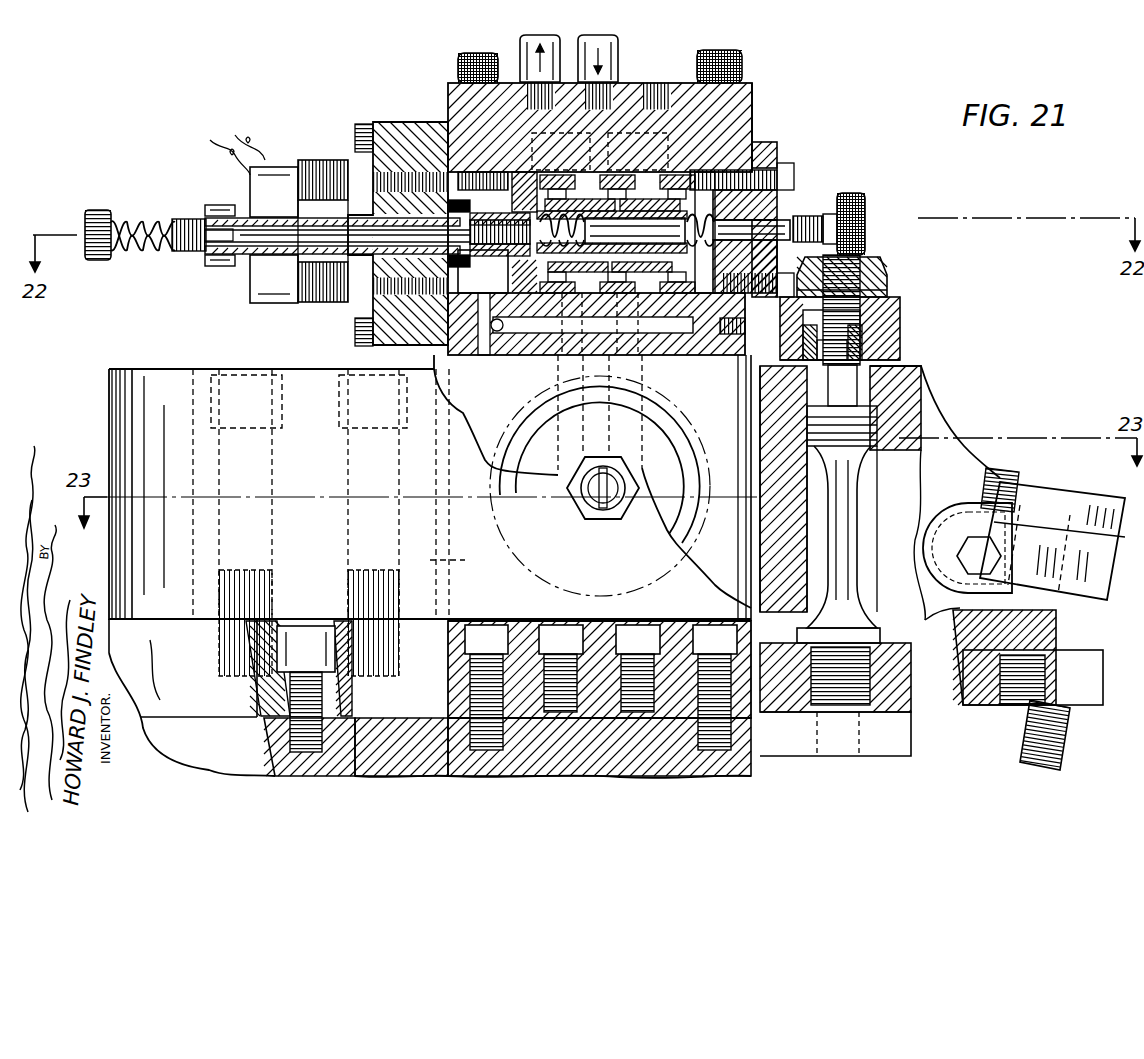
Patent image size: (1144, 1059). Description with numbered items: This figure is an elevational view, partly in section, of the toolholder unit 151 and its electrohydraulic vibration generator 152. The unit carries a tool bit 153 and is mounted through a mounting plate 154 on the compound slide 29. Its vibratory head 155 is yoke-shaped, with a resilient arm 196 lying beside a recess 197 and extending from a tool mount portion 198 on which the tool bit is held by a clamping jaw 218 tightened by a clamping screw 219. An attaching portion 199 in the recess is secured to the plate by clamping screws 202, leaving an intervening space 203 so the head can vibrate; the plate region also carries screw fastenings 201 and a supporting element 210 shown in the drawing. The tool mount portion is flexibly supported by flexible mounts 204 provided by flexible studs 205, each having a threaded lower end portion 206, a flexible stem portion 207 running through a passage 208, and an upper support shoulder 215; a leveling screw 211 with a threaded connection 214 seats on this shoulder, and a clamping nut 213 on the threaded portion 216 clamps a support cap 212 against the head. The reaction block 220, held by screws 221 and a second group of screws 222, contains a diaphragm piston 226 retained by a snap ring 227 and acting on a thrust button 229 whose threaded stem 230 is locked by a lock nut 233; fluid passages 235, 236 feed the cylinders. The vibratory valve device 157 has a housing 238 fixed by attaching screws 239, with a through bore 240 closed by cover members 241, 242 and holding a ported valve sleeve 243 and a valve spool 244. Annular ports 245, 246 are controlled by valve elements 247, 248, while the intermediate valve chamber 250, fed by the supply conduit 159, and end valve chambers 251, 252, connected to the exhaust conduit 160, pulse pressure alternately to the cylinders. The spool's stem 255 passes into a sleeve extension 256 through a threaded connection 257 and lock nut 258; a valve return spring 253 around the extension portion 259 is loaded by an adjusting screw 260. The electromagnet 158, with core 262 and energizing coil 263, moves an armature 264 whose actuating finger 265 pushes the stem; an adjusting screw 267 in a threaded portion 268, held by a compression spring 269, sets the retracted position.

The compound slide 29 is at (365, 766).
The toolholder unit 151 is at (328, 490).
The electrohydraulic vibration generator 152 is at (432, 120).
The tool bit 153 is at (1090, 502).
The mounting plate 154 is at (176, 758).
The vibratory head 155 is at (295, 364).
The vibratory valve device 157 is at (757, 94).
The electromagnet 158 is at (220, 266).
The supply conduit 159 is at (619, 52).
The exhaust conduit 160 is at (521, 46).
The resilient arm 196 is at (599, 685).
The recess 197 is at (769, 488).
The tool mount portion 198 is at (930, 410).
The attaching portion 199 is at (464, 560).
The cap screw 201 is at (158, 620).
The clamping screw 202 is at (350, 594).
The intervening space 203 is at (606, 620).
The flexible mount 204 is at (888, 265).
The flexible stud 205 is at (857, 478).
The lower end portion 206 is at (885, 665).
The flexible stem portion 207 is at (857, 500).
The passage 208 is at (905, 598).
The washer 210 is at (898, 358).
The leveling screw 211 is at (868, 340).
The support cap 212 is at (900, 318).
The clamping nut 213 is at (888, 272).
The threaded connection 214 is at (921, 385).
The upper support shoulder 215 is at (842, 405).
The threaded portion 216 is at (888, 292).
The clamping jaw 218 is at (1088, 605).
The clamping screw 219 is at (1000, 568).
The reaction block 220 is at (818, 489).
The screw 221 is at (578, 716).
The screw 222 is at (505, 758).
The diaphragm-type flexible piston 226 is at (672, 470).
The snap ring 227 is at (662, 420).
The thrust button 229 is at (674, 512).
The threaded stem 230 is at (612, 521).
The lock nut 233 is at (586, 521).
The fluid passage 235 is at (558, 388).
The fluid passage 236 is at (655, 382).
The housing 238 is at (756, 118).
The attaching screw 239 is at (745, 64).
The through bore 240 is at (470, 293).
The cover member 241 is at (384, 124).
The cover member 242 is at (772, 144).
The ported valve sleeve 243 is at (730, 166).
The valve spool 244 is at (635, 225).
The internal annular port 245 is at (582, 186).
The internal annular port 246 is at (648, 186).
The annular valve element 247 is at (522, 214).
The annular valve element 248 is at (672, 186).
The intermediate valve chamber 250 is at (577, 226).
The end valve chamber 251 is at (535, 195).
The end valve chamber 252 is at (675, 236).
The valve return spring 253 is at (751, 241).
The stem 255 is at (450, 284).
The sleeve extension 256 is at (248, 272).
The threaded connection 257 is at (483, 271).
The lock nut 258 is at (455, 220).
The extension portion 259 is at (612, 233).
The adjusting screw 260 is at (805, 215).
The core 262 is at (262, 195).
The energizing coil 263 is at (290, 210).
The armature 264 is at (208, 206).
The actuating finger 265 is at (245, 230).
The adjusting screw 267 is at (97, 210).
The threaded portion 268 is at (186, 252).
The compression spring 269 is at (125, 214).